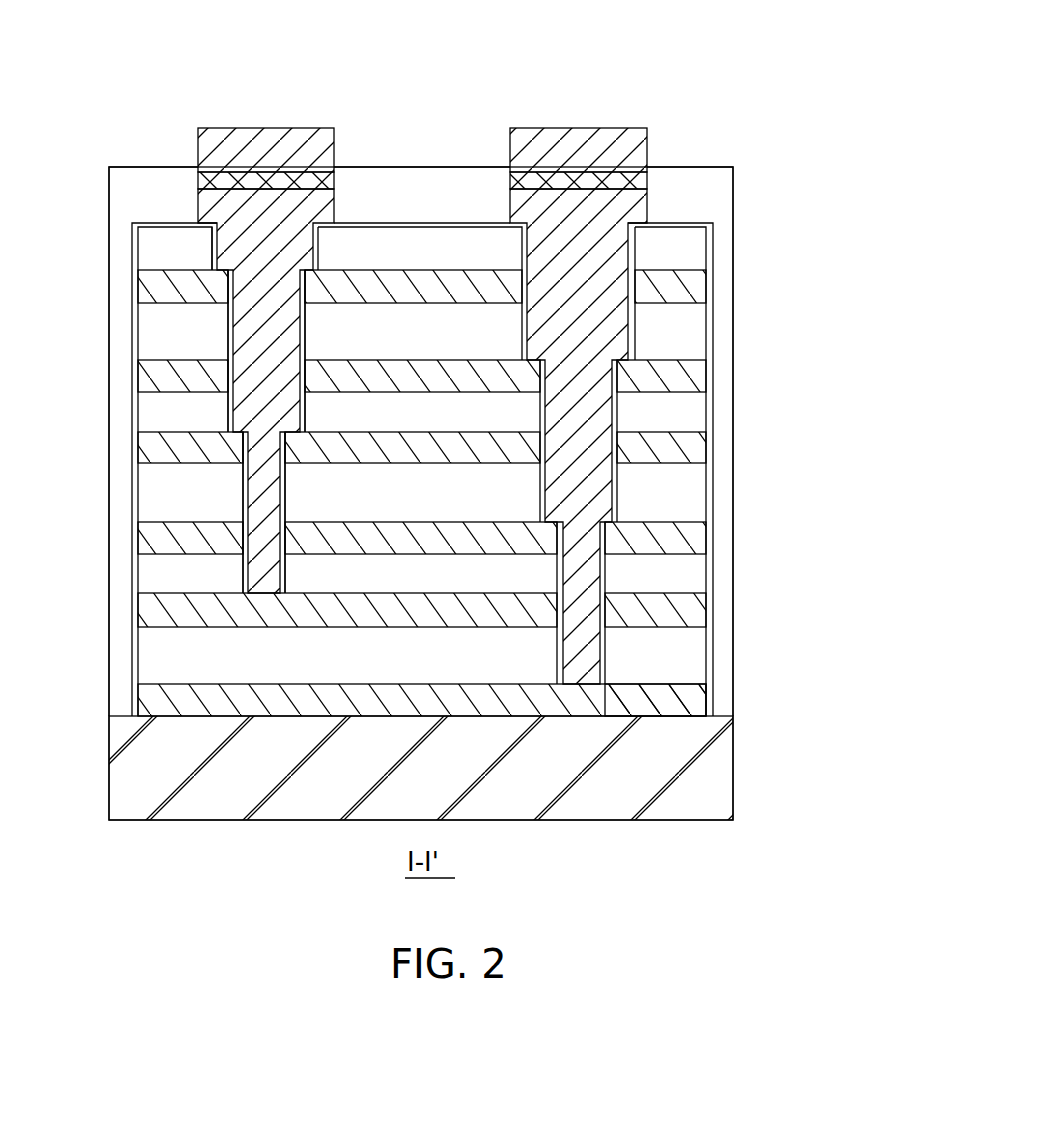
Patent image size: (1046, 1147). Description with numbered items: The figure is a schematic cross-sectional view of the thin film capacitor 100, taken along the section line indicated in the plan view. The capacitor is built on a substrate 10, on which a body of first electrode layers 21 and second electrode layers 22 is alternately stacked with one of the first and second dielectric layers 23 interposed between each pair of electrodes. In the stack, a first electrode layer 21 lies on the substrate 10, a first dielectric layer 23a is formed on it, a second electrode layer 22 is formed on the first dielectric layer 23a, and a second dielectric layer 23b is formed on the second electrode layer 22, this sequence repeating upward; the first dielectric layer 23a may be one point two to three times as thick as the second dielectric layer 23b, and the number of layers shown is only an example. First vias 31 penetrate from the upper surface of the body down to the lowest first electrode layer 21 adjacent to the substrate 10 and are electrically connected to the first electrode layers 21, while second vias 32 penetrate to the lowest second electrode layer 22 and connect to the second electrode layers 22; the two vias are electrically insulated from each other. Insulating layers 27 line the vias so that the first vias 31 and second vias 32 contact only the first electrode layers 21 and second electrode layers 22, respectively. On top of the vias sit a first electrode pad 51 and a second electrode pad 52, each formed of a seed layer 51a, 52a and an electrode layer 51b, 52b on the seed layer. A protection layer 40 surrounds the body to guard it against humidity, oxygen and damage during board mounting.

The thin film capacitor 100 is at (408, 27).
The substrate 10 is at (727, 762).
The protection layer 40 is at (722, 192).
The first electrode layer 21 is at (140, 380).
The second electrode layer 22 is at (140, 287).
The first and second dielectric layers 23 is at (806, 248).
The first dielectric layer 23a is at (690, 328).
The second dielectric layer 23b is at (690, 243).
The insulating layer 27 is at (242, 492).
The first via 31 is at (645, 207).
The second via 32 is at (330, 207).
The first electrode pad 51 is at (607, 75).
The seed layer 51a is at (595, 178).
The electrode layer 51b is at (560, 131).
The second electrode pad 52 is at (289, 75).
The seed layer 52a is at (273, 178).
The electrode layer 52b is at (238, 131).